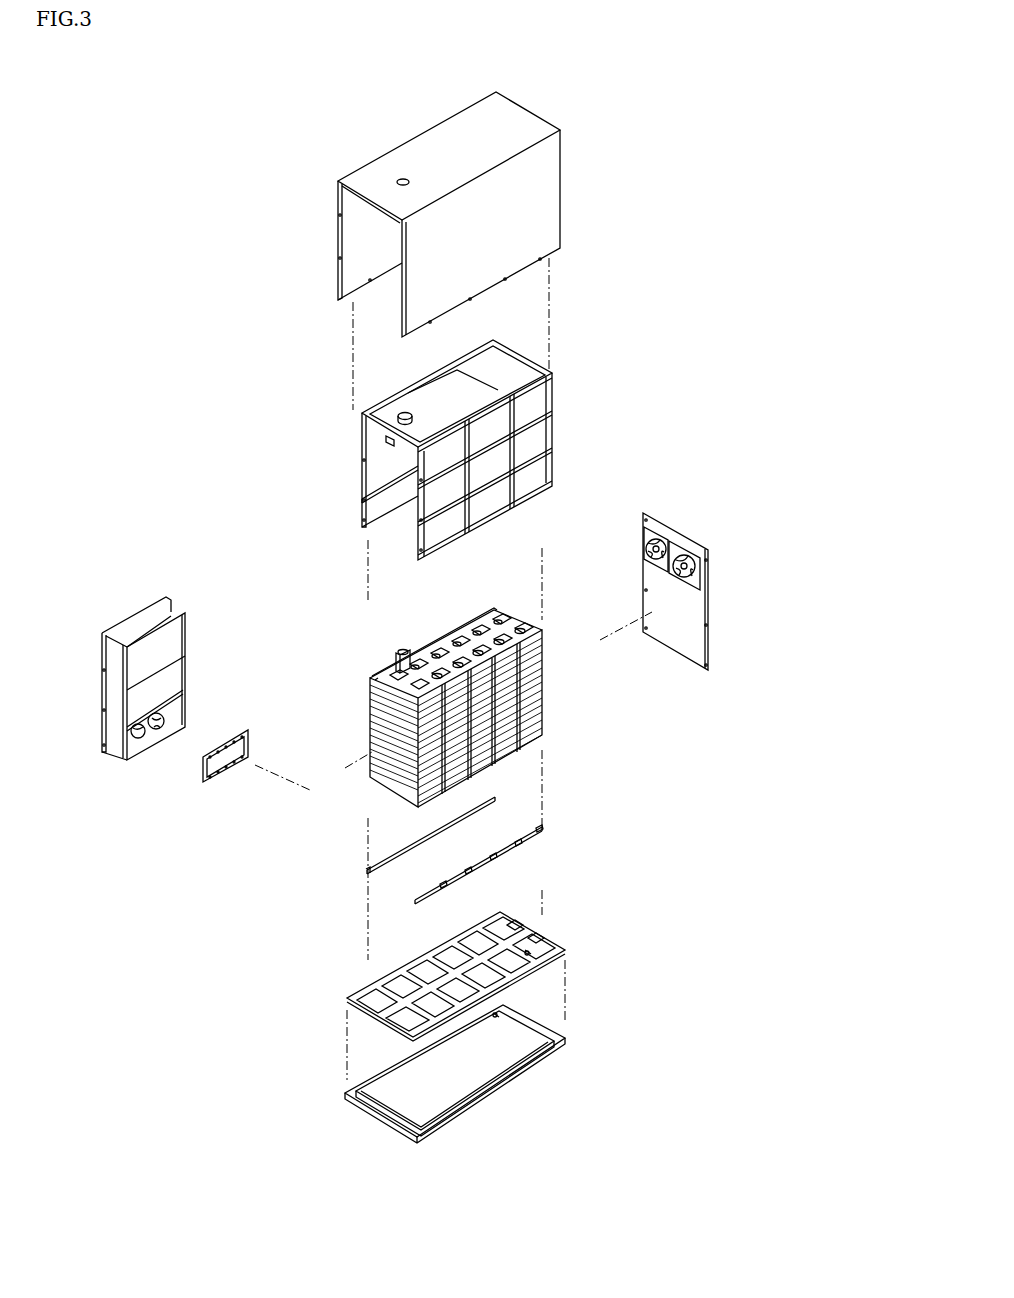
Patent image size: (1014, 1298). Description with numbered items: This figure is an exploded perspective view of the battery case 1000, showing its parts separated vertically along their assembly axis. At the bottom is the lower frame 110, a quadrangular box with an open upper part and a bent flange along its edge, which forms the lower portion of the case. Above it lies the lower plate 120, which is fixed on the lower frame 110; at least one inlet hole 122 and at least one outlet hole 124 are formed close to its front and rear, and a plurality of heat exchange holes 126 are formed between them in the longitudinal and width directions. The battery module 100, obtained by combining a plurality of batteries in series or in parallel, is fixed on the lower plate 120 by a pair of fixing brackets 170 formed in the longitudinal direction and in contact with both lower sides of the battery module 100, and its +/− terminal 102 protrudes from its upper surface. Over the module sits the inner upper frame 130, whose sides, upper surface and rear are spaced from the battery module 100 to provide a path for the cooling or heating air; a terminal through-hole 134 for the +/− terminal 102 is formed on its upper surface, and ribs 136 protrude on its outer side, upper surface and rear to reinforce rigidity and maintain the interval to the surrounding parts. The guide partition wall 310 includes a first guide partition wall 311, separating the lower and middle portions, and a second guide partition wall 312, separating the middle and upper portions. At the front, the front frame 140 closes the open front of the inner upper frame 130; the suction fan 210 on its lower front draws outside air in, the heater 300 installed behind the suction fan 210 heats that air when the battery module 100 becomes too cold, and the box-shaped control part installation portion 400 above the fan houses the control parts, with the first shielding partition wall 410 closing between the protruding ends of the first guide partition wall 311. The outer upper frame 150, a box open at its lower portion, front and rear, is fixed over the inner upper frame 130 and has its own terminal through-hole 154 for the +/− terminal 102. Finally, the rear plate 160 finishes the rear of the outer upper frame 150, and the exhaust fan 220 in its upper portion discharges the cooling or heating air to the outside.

The battery case 1000 is at (680, 198).
The outer upper frame 150 is at (520, 113).
The terminal through-hole 154 is at (401, 179).
The inner upper frame 130 is at (562, 378).
The terminal through-hole 134 is at (398, 414).
The rib 136 is at (541, 466).
The guide partition wall 310 is at (283, 460).
The first guide partition wall 311 is at (380, 479).
The second guide partition wall 312 is at (388, 440).
The battery module 100 is at (553, 700).
The +/− terminal 102 is at (404, 655).
The rear plate 160 is at (695, 633).
The exhaust fan 220 is at (667, 532).
The front frame 140 is at (148, 606).
The control part installation portion 400 is at (149, 667).
The first shielding partition wall 410 is at (170, 688).
The suction fan 210 is at (157, 738).
The heater 300 is at (205, 782).
The fixing bracket 170 is at (545, 828).
The lower plate 120 is at (386, 978).
The inlet hole 122 is at (377, 1023).
The outlet hole 124 is at (520, 930).
The lower frame 110 is at (489, 1087).
The heat exchange hole 126 is at (525, 957).